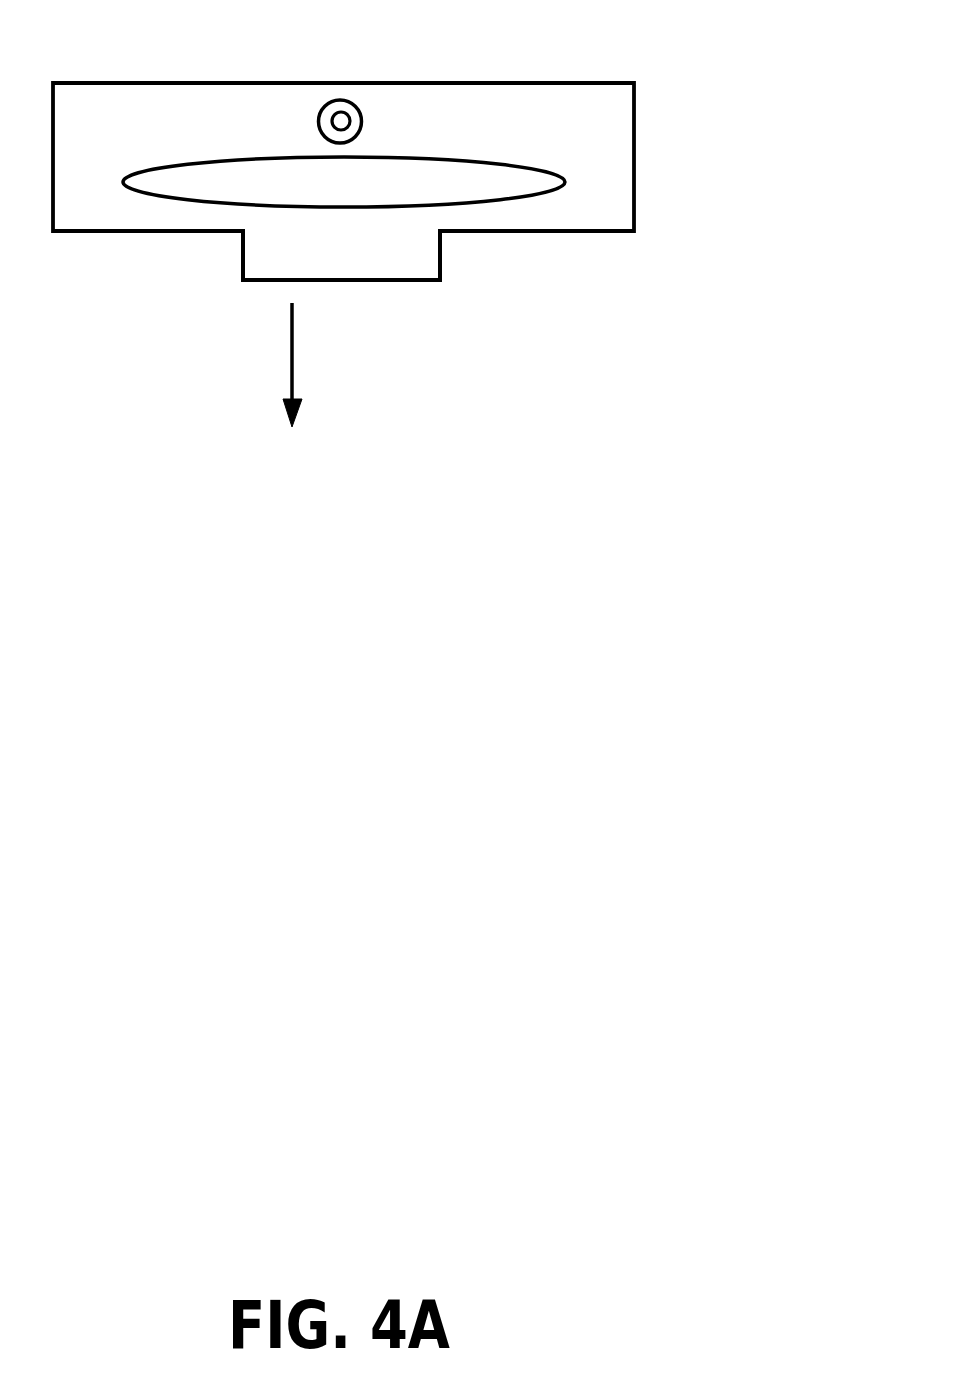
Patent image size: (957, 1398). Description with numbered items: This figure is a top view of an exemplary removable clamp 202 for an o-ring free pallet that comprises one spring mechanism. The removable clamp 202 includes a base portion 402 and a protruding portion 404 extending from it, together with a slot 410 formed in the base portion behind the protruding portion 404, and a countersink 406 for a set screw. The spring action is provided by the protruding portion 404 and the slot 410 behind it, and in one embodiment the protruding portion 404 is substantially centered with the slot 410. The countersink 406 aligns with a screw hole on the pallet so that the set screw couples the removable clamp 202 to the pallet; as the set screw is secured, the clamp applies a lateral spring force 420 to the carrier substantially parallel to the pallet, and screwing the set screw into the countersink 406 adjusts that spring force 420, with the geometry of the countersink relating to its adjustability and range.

The removable clamp 202 is at (600, 133).
The base portion 402 is at (182, 212).
The protruding portion 404 is at (343, 255).
The countersink 406 is at (341, 104).
The slot 410 is at (500, 182).
The spring force 420 is at (277, 412).